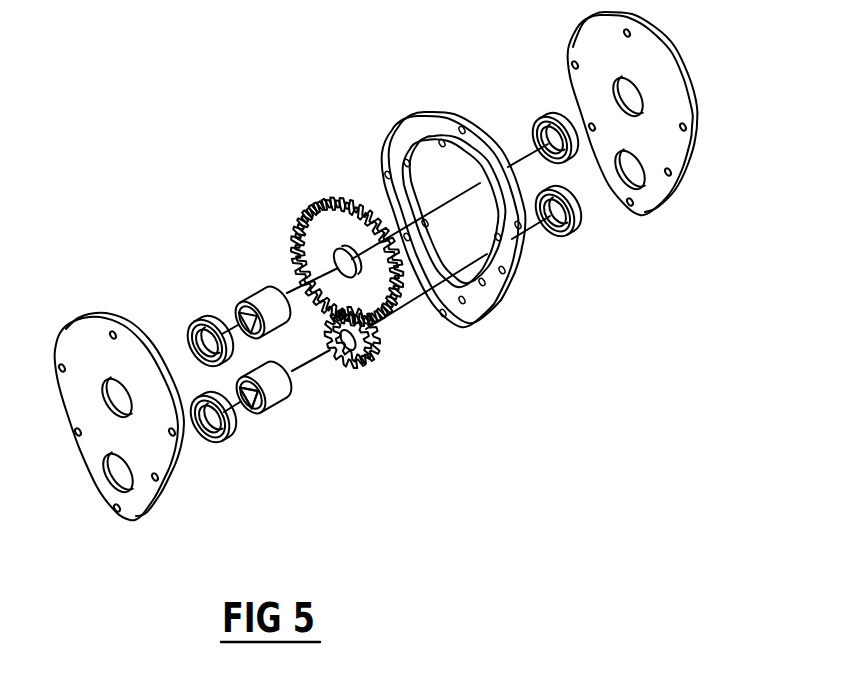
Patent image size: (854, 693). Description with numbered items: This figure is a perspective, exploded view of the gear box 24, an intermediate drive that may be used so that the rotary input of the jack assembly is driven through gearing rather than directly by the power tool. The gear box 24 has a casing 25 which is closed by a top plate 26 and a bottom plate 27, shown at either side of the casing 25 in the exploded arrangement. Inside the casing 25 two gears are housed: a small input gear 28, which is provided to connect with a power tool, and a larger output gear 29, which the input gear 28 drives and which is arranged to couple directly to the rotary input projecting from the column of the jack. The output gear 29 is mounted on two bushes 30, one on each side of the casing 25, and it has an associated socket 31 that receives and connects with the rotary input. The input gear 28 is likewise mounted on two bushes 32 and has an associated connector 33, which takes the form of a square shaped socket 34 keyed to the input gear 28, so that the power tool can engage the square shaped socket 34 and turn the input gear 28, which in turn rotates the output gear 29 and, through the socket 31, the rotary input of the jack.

The gear box 24 is at (389, 458).
The casing 25 is at (432, 110).
The top plate 26 is at (99, 317).
The bottom plate 27 is at (638, 215).
The input gear 28 is at (325, 355).
The output gear 29 is at (335, 198).
The bushes 30 is at (202, 318).
The socket 31 is at (257, 290).
The bushes 32 is at (225, 446).
The connector 33 is at (273, 411).
The square shaped socket 34 is at (246, 412).